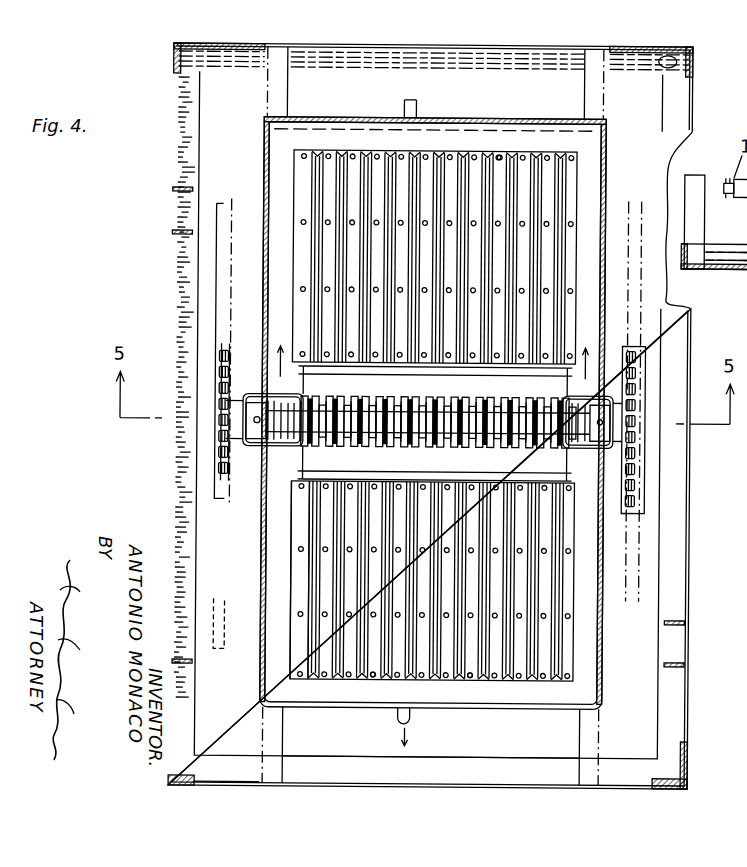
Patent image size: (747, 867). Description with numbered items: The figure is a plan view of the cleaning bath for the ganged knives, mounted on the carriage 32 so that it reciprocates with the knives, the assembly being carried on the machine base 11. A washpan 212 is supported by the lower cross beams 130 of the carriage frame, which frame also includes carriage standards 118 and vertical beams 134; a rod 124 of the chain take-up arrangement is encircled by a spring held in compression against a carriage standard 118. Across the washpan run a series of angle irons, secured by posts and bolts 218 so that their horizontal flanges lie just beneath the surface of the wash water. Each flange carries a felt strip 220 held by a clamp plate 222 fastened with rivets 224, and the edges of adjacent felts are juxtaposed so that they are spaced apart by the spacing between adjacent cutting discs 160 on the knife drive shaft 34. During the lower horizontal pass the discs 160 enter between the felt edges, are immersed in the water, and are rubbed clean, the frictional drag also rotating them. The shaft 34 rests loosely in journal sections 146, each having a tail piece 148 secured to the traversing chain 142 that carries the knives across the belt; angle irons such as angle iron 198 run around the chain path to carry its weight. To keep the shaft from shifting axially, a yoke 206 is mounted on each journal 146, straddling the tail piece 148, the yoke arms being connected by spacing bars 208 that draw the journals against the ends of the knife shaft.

The base 11 is at (180, 782).
The carriage 32 is at (151, 225).
The knife drive shaft 34 is at (520, 446).
The carriage standard 118 is at (664, 58).
The rod 124 is at (297, 674).
The lower cross beam 130 is at (676, 110).
The vertical beam 134 is at (183, 190).
The traversing chain 142 is at (222, 447).
The journal section 146 is at (600, 433).
The tail piece 148 is at (235, 424).
The steel disc 160 is at (308, 457).
The angle iron 198 is at (635, 665).
The yoke 206 is at (264, 396).
The spacing bar 208 is at (345, 352).
The washpan 212 is at (535, 700).
The bolt 218 is at (499, 162).
The felt strip 220 is at (464, 683).
The clamp plate 222 is at (328, 172).
The rivet 224 is at (373, 220).